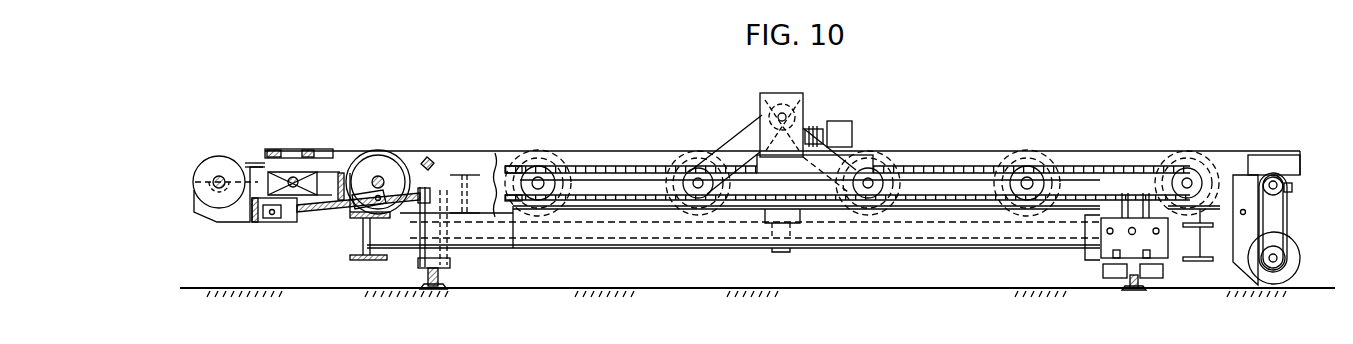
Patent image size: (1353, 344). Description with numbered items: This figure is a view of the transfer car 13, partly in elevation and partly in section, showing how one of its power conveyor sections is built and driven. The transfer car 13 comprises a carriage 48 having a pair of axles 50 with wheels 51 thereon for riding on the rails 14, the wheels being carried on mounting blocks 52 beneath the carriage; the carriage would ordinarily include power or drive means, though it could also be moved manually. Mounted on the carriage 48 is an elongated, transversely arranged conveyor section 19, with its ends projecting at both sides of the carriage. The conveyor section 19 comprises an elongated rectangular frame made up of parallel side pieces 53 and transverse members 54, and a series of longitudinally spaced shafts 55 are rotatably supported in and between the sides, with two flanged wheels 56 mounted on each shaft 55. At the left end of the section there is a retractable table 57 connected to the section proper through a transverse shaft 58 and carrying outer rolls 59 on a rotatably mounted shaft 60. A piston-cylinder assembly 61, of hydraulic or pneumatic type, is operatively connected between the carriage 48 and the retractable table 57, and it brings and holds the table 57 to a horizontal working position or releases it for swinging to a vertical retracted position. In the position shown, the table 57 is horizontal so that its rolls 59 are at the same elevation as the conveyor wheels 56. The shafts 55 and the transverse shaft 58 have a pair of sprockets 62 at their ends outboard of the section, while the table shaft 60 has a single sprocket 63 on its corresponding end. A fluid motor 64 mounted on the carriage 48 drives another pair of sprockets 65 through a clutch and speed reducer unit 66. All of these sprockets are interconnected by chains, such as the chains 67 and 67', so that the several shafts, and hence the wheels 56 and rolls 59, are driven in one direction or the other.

The transfer car 13 is at (459, 113).
The rails 14 is at (428, 280).
The conveyor section 19 is at (452, 147).
The carriage 48 is at (368, 237).
The axles 50 is at (877, 240).
The wheels 51 is at (443, 267).
The mounting block 52 is at (1163, 272).
The side pieces 53 is at (472, 153).
The transverse members 54 is at (424, 158).
The shafts 55 is at (540, 181).
The flanged wheels 56 is at (380, 150).
The retractable table 57 is at (509, 165).
The transverse shaft 58 is at (294, 177).
The outer rolls 59 is at (217, 157).
The shaft 60 is at (218, 184).
The piston-cylinder assembly 61 is at (343, 215).
The sprockets 62 is at (997, 180).
The sprocket 63 is at (1278, 244).
The fluid motor 64 is at (852, 132).
The sprockets 65 is at (757, 118).
The clutch and speed reducer unit 66 is at (803, 102).
The chains 67 is at (862, 156).
The belt loop 67' is at (1305, 222).